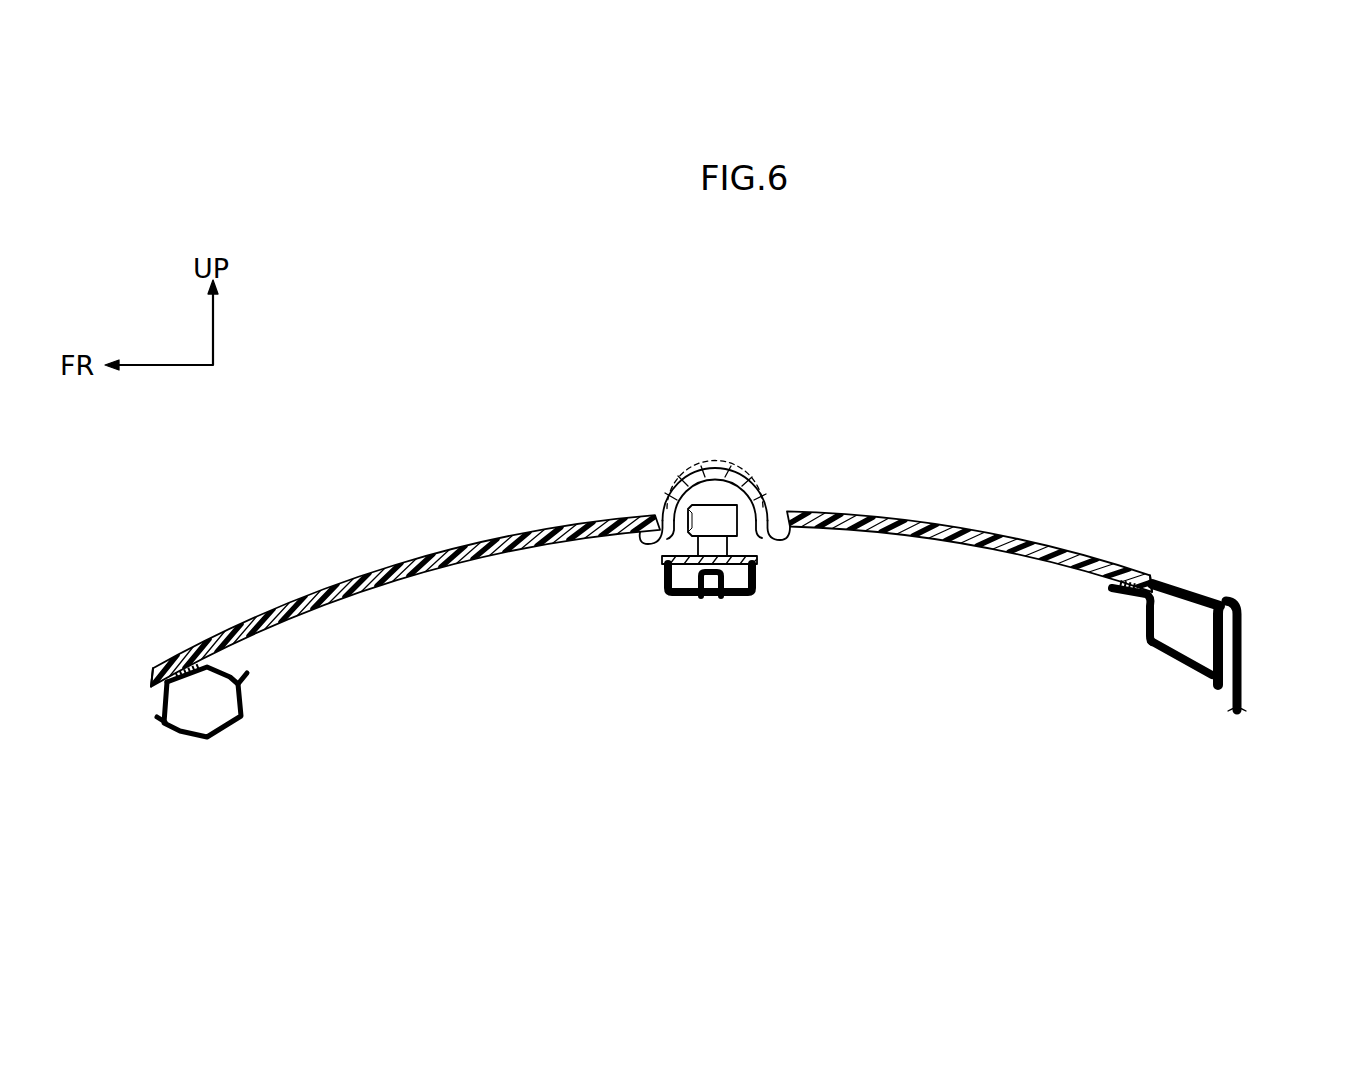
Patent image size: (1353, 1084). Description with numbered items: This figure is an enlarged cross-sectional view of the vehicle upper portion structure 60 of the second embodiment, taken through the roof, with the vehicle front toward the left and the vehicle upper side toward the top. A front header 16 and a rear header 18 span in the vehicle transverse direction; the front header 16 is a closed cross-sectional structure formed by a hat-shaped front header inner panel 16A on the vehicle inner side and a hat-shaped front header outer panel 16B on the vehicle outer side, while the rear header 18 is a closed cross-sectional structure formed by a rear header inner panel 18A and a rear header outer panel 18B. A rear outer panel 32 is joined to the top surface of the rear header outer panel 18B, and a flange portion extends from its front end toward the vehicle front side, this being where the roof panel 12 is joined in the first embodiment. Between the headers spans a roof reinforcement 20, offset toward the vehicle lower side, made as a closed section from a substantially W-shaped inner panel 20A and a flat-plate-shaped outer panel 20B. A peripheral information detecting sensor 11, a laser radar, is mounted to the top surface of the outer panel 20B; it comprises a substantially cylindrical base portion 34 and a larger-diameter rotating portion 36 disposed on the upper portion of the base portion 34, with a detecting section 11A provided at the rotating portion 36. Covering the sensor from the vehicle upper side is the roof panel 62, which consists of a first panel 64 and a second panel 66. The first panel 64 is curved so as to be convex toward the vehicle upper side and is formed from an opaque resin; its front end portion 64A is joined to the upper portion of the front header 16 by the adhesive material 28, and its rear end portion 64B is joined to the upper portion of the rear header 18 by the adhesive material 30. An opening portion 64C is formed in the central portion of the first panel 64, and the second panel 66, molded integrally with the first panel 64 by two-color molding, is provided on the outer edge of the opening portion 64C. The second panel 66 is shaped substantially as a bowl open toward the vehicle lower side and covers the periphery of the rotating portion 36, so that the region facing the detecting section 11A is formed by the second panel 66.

The peripheral information detecting sensor 11 is at (670, 485).
The detecting section 11A is at (688, 520).
The roof panel 12 is at (873, 507).
The front header 16 is at (239, 743).
The front header inner panel 16A is at (243, 702).
The front header outer panel 16B is at (245, 675).
The rear header 18 is at (1169, 626).
The rear header inner panel 18A is at (1178, 660).
The rear header outer panel 18B is at (1237, 640).
The roof reinforcement 20 is at (766, 641).
The inner panel 20A is at (726, 598).
The outer panel 20B is at (752, 558).
The adhesive material 28 is at (170, 680).
The adhesive material 30 is at (1108, 576).
The rear outer panel 32 is at (1222, 601).
The base portion 34 is at (690, 540).
The rotating portion 36 is at (704, 500).
The roof structure 60 is at (490, 420).
The roof panel 62 is at (656, 506).
The first panel 64 is at (413, 556).
The front end portion 64A is at (180, 655).
The rear end portion 64B is at (1140, 573).
The opening portion 64C is at (772, 518).
The second panel 66 is at (660, 483).